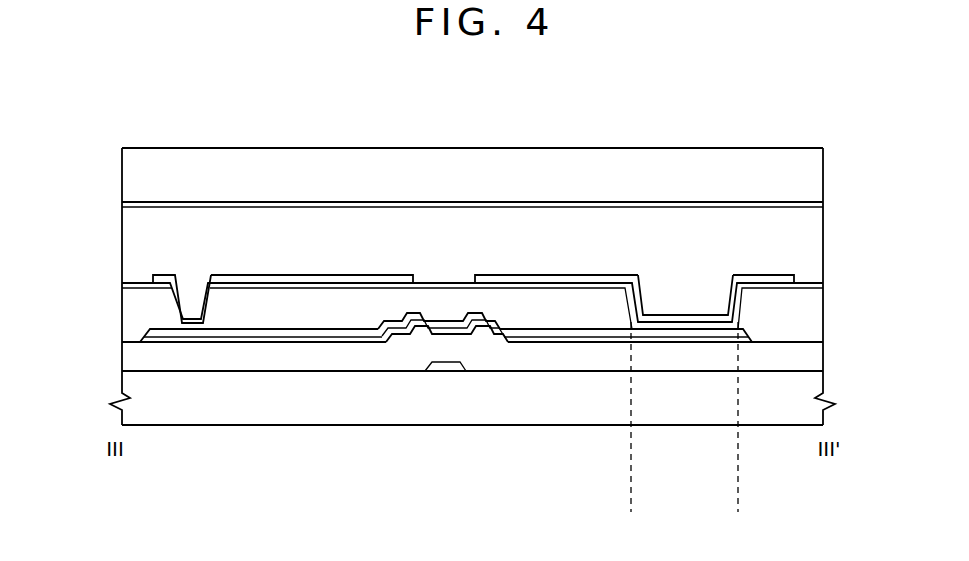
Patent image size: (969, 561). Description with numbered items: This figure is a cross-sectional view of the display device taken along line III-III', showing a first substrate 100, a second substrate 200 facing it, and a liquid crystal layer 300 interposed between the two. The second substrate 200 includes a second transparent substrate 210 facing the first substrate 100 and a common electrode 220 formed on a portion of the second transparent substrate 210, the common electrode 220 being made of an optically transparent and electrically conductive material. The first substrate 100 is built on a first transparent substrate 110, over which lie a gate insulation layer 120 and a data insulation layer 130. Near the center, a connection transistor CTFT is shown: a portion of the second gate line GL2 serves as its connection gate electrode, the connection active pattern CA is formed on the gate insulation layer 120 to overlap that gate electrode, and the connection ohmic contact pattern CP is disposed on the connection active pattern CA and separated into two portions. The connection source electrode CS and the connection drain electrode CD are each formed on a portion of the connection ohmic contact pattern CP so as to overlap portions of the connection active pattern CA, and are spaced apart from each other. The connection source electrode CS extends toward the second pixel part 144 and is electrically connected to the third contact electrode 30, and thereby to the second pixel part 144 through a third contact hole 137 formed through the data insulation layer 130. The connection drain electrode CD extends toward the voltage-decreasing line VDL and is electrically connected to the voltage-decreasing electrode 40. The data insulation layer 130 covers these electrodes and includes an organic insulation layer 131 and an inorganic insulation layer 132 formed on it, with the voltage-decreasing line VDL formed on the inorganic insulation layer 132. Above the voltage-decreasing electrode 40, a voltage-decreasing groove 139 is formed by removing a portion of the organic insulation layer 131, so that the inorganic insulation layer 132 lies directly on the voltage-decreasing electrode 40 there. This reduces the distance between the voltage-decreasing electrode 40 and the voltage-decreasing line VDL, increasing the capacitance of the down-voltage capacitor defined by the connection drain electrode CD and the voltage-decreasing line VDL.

The second substrate 200 is at (108, 148).
The second transparent substrate 210 is at (278, 165).
The common electrode 220 is at (425, 207).
The liquid crystal layer 300 is at (108, 211).
The first substrate 100 is at (108, 417).
The first transparent substrate 110 is at (272, 410).
The gate insulation layer 120 is at (327, 363).
The third contact electrode 30 is at (192, 335).
The data insulation layer 130 is at (501, 277).
The organic insulation layer 131 is at (807, 298).
The inorganic insulation layer 132 is at (750, 285).
The third contact hole 137 is at (191, 283).
The voltage-decreasing groove 139 is at (687, 283).
The second pixel part 144 is at (351, 277).
The voltage-decreasing line VDL is at (520, 277).
The voltage-decreasing electrode 40 is at (683, 336).
The connection transistor CTFT is at (353, 495).
The connection source electrode CS is at (383, 336).
The connection active pattern CA is at (435, 333).
The second gate line GL2 is at (442, 368).
The connection ohmic contact pattern CP is at (472, 343).
The connection drain electrode CD is at (492, 340).